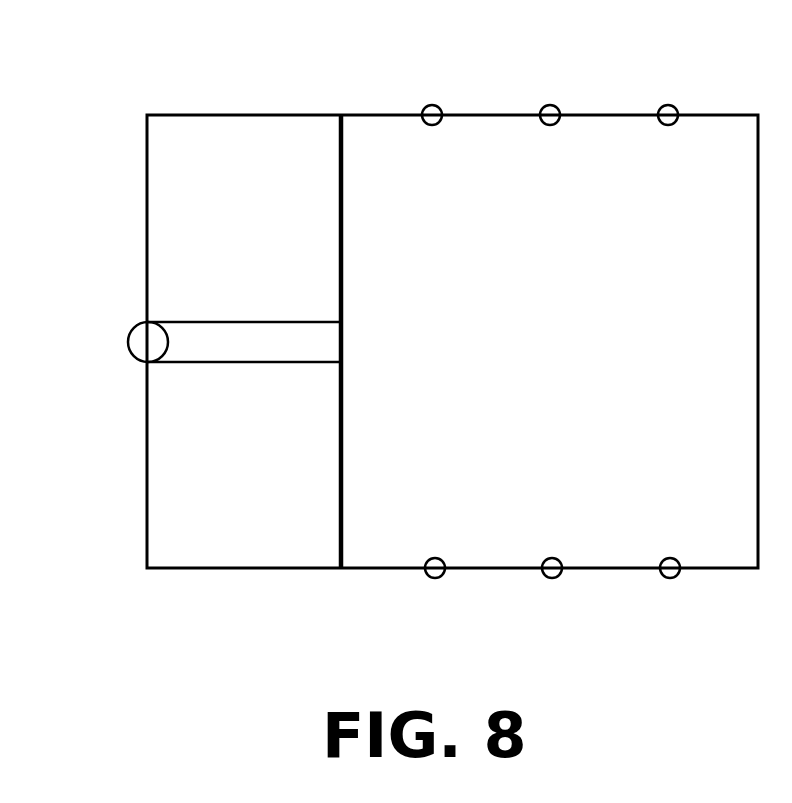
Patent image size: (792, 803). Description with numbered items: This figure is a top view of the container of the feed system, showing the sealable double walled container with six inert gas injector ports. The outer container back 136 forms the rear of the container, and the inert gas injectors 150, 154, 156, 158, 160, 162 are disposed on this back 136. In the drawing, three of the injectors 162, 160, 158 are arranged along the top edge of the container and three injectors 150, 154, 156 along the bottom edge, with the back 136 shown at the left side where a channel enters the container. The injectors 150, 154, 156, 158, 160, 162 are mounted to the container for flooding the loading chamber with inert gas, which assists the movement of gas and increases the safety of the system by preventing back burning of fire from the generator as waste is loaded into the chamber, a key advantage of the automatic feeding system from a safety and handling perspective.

The outer container back 136 is at (132, 328).
The inert gas injector 150 is at (435, 579).
The inert gas injector 154 is at (552, 579).
The inert gas injector 156 is at (670, 579).
The inert gas injector 158 is at (668, 104).
The inert gas injector 160 is at (550, 104).
The inert gas injector 162 is at (432, 104).